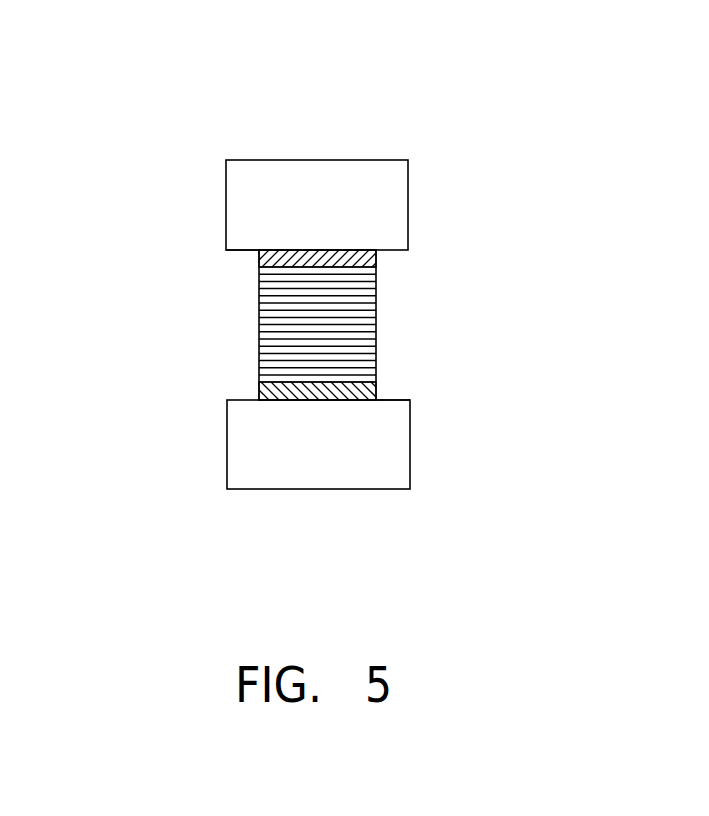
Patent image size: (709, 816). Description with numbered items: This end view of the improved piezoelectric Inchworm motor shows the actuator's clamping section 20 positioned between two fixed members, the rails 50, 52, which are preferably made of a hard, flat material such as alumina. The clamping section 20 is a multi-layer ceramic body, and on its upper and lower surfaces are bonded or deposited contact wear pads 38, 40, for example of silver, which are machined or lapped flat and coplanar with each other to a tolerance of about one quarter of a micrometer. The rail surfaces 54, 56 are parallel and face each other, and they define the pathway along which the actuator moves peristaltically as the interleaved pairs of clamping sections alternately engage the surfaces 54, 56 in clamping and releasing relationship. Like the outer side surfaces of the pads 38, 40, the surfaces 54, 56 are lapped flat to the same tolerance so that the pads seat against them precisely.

The rail 50 is at (260, 209).
The rail 52 is at (264, 459).
The clamping section 20 is at (320, 323).
The contact wear pad 38 is at (258, 265).
The contact wear pad 40 is at (262, 393).
The rail surface 54 is at (161, 222).
The rail surface 56 is at (481, 433).